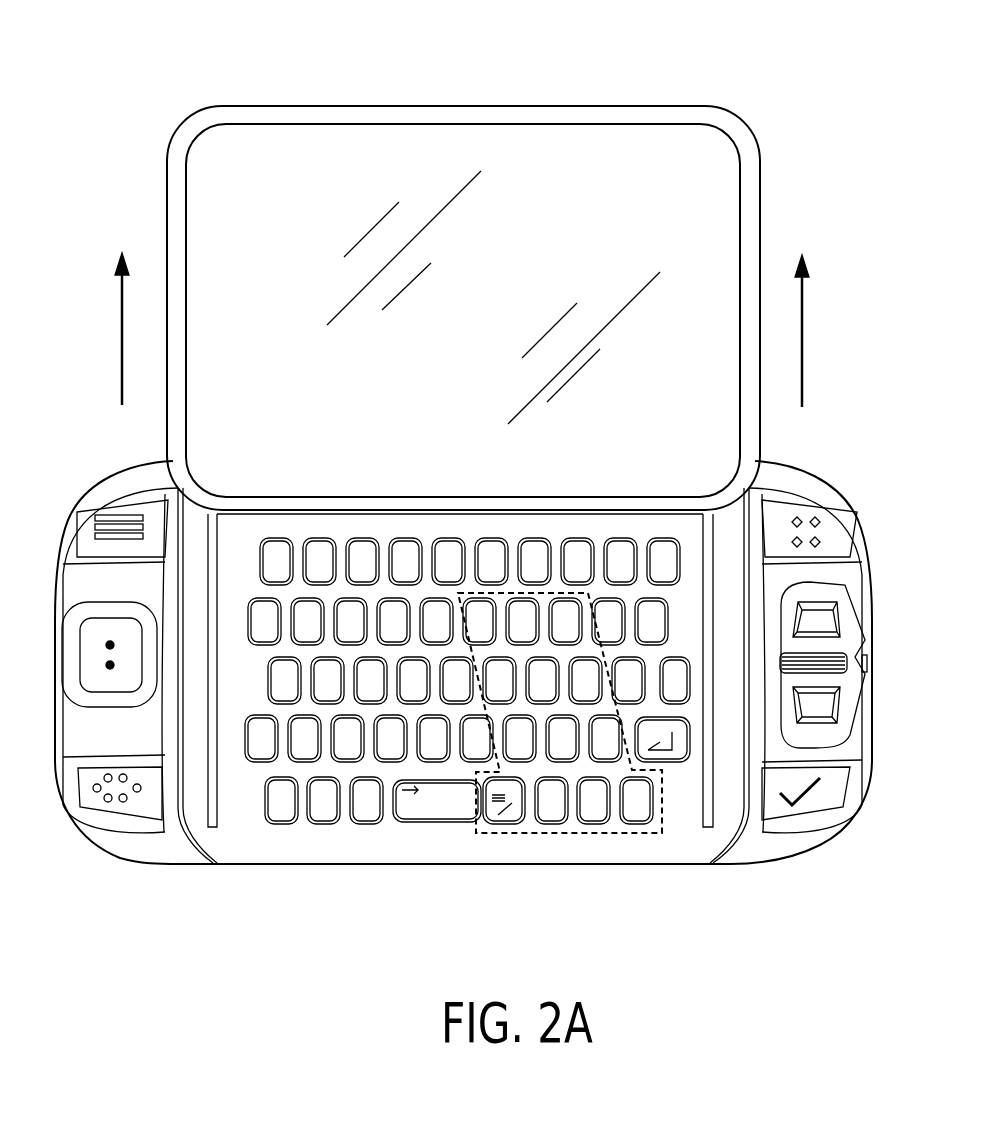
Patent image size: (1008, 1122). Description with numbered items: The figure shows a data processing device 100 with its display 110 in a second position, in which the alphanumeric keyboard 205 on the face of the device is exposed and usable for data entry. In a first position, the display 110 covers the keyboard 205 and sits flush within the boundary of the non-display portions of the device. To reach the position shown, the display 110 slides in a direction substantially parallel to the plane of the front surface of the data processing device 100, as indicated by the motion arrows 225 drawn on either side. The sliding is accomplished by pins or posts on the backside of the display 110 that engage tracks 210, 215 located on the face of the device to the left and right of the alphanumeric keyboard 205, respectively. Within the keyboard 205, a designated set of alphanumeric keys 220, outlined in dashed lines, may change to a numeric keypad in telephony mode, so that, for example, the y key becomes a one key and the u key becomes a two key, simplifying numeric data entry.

The data processing device 100 is at (111, 76).
The display 110 is at (452, 110).
The alphanumeric keyboard 205 is at (341, 434).
The track 210 is at (213, 827).
The track 215 is at (708, 827).
The designated set of alphanumeric keys 220 is at (540, 833).
The motion arrows 225 is at (122, 323).